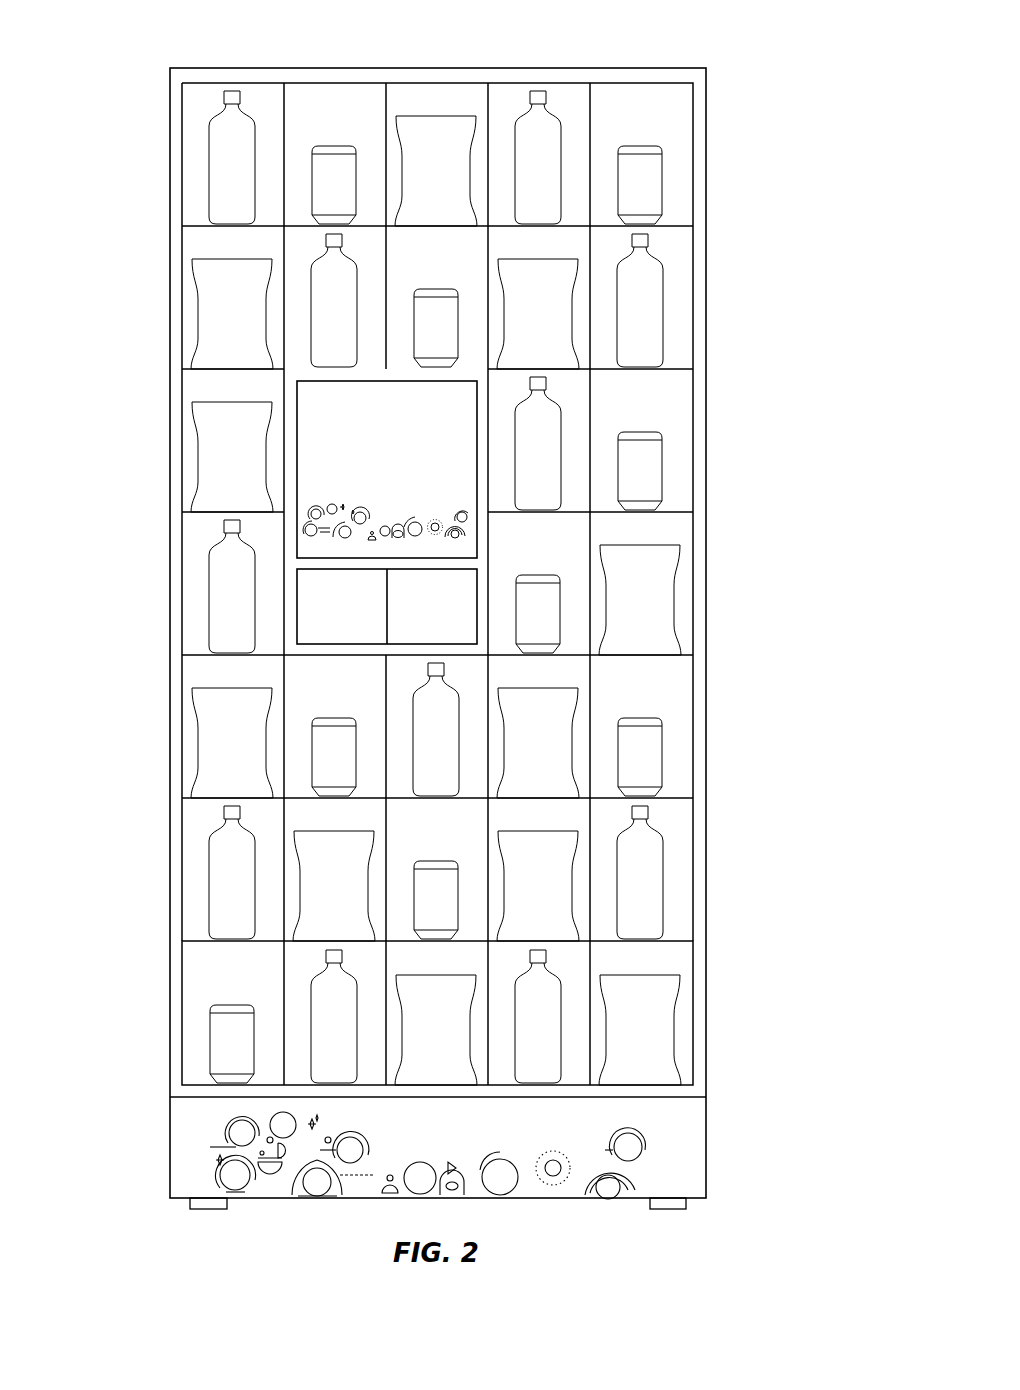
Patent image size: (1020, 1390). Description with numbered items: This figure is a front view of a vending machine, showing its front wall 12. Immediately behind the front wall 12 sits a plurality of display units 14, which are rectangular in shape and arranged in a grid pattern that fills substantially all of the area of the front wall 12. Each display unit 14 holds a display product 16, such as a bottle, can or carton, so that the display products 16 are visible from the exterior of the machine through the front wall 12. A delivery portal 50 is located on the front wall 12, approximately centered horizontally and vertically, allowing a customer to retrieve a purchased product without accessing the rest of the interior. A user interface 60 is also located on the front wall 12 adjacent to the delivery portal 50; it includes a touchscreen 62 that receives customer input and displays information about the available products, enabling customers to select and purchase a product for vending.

The front wall 12 is at (608, 688).
The display unit 14 is at (208, 970).
The display product 16 is at (228, 102).
The delivery portal 50 is at (318, 598).
The user interface 60 is at (490, 437).
The touchscreen 62 is at (327, 408).